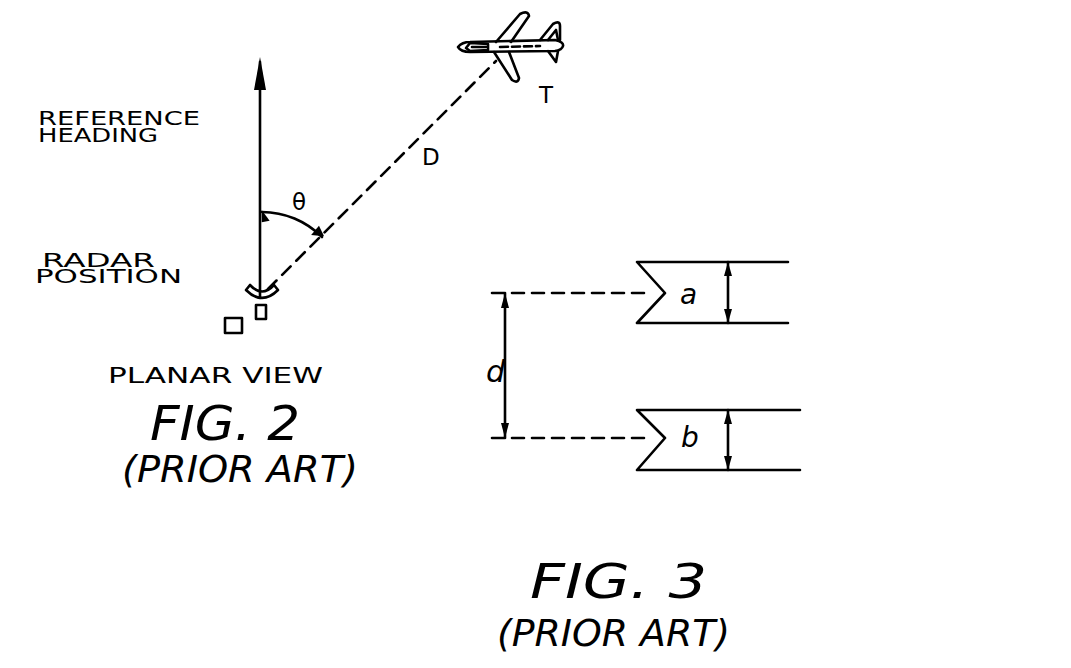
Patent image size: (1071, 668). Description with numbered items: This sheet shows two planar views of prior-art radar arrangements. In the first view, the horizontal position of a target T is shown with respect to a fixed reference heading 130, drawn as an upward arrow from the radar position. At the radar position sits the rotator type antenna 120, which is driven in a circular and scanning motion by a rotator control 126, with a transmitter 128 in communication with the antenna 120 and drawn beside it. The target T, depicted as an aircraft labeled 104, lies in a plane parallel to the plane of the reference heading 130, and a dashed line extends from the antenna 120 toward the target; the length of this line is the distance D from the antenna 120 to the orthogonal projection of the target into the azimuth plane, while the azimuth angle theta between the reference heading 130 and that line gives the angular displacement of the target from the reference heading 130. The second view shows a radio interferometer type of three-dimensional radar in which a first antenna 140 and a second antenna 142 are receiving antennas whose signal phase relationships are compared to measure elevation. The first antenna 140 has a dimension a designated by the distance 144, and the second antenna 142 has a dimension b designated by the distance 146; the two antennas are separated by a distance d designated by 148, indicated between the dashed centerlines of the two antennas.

In FIG. 2, the target aircraft 104 is at (545, 30).
In FIG. 2, the rotator type antenna 120 is at (278, 298).
In FIG. 2, the rotator control 126 is at (268, 312).
In FIG. 2, the transmitter 128 is at (225, 326).
In FIG. 2, the reference heading 130 is at (260, 181).
In FIG. 3, the first antenna 140 is at (648, 278).
In FIG. 3, the second antenna 142 is at (651, 453).
In FIG. 3, the distance 144 is at (741, 293).
In FIG. 3, the distance 146 is at (740, 440).
In FIG. 3, the distance 148 is at (541, 344).